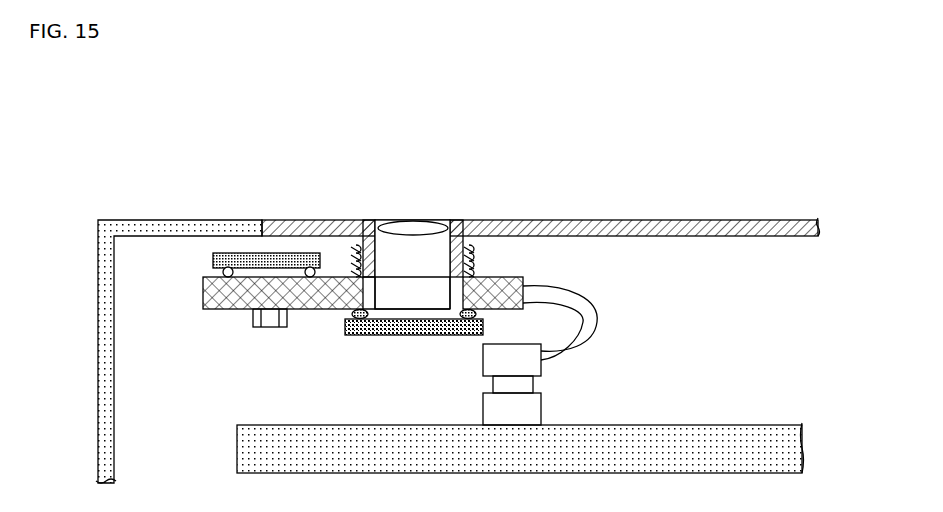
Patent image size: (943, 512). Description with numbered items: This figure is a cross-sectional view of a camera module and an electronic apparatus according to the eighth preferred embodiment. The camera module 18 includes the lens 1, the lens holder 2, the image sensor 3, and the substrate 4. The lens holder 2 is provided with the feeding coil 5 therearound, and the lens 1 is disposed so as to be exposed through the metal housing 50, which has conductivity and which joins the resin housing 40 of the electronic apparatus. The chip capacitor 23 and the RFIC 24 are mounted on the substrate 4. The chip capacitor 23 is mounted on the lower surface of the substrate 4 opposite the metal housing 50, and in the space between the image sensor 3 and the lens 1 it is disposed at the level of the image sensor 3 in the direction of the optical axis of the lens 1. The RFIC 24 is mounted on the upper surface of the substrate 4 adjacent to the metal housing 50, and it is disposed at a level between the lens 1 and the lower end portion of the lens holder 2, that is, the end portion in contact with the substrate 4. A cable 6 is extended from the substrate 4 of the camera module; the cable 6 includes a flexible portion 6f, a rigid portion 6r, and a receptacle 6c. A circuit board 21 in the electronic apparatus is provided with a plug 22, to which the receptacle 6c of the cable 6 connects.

The lens 1 is at (415, 228).
The lens holder 2 is at (458, 226).
The image sensor 3 is at (406, 338).
The substrate 4 is at (204, 292).
The feeding coil 5 is at (476, 258).
The cable 6 is at (642, 330).
The flexible portion 6f is at (595, 328).
The rigid portion 6r is at (532, 368).
The receptacle 6c is at (533, 384).
The camera module 18 is at (228, 338).
The circuit board 21 is at (712, 432).
The plug 22 is at (483, 408).
The chip capacitor 23 is at (272, 328).
The RFIC 24 is at (212, 259).
The resin housing 40 is at (188, 222).
The metal housing 50 is at (627, 222).